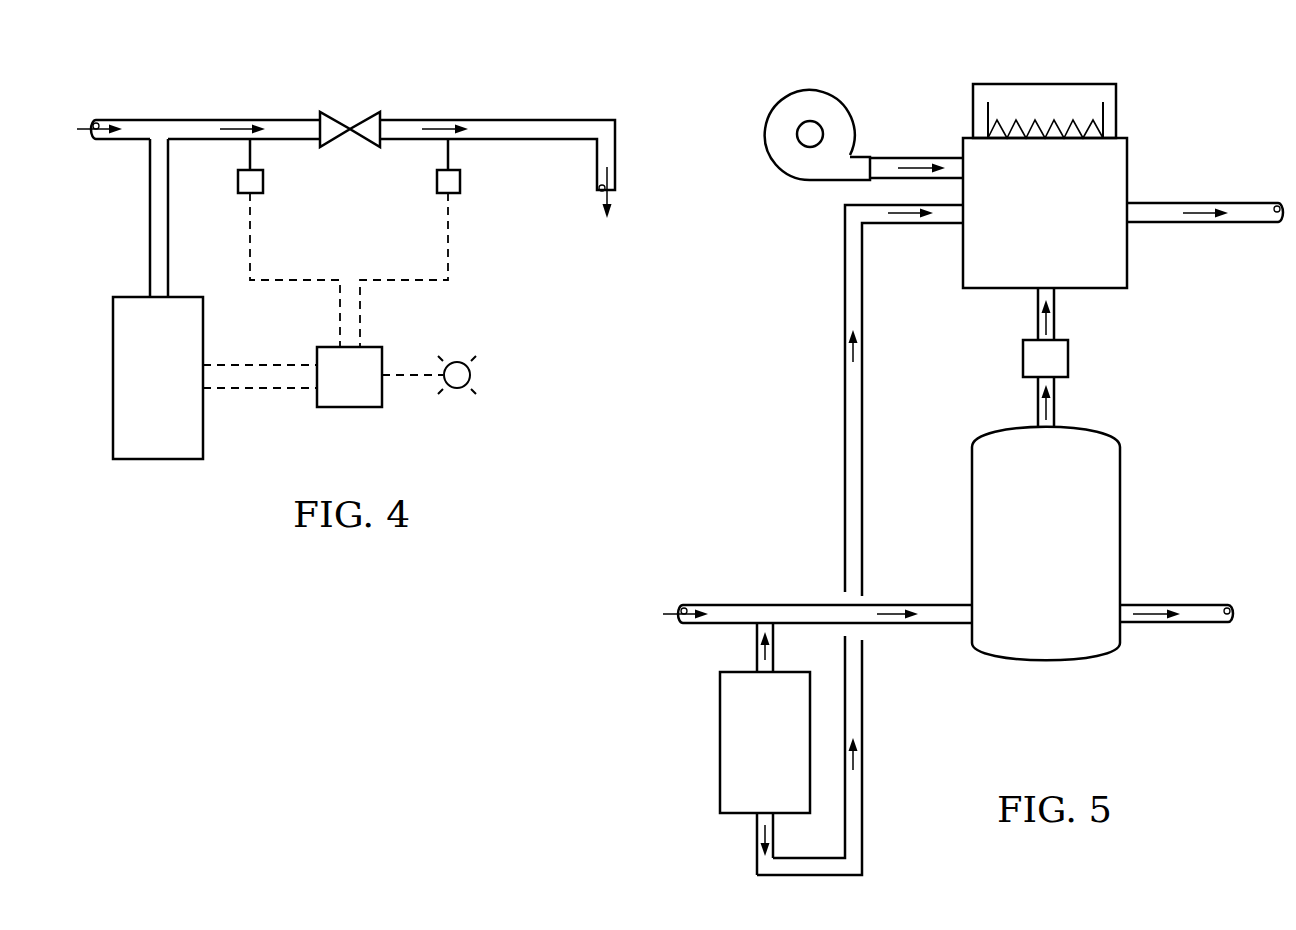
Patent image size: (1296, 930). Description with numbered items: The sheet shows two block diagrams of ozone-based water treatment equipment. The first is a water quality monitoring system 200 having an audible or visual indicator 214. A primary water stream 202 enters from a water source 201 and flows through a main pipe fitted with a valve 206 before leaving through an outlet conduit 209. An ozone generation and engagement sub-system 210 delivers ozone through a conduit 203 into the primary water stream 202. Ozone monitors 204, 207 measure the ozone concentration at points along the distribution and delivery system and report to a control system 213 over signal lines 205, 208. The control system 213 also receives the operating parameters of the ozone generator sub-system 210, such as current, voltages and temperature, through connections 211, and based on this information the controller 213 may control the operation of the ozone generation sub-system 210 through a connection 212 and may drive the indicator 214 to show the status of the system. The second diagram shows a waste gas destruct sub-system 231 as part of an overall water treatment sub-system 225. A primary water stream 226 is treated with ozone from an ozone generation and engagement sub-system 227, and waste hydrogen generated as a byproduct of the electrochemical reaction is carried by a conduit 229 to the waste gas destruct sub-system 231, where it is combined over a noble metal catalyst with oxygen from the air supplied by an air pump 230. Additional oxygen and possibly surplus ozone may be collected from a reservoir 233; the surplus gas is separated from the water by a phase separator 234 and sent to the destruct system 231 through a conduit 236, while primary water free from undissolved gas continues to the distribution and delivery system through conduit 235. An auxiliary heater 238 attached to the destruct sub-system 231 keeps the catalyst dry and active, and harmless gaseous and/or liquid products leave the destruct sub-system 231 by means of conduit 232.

In FIG. 4, the water quality monitoring system 200 is at (516, 82).
In FIG. 4, the water source 201 is at (93, 121).
In FIG. 4, the primary water stream 202 is at (160, 120).
In FIG. 4, the conduit 203 is at (150, 194).
In FIG. 4, the ozone monitor 204 is at (263, 187).
In FIG. 4, the first sensor signal line 205 is at (252, 252).
In FIG. 4, the valve 206 is at (362, 118).
In FIG. 4, the ozone monitor 207 is at (461, 173).
In FIG. 4, the second sensor signal line 208 is at (450, 252).
In FIG. 4, the outlet conduit 209 is at (617, 156).
In FIG. 4, the ozone generation and engagement sub-system 210 is at (134, 295).
In FIG. 4, the connections 211 is at (287, 366).
In FIG. 4, the connection 212 is at (250, 389).
In FIG. 4, the control system 213 is at (352, 408).
In FIG. 4, the audible or visual indicator 214 is at (470, 372).
In FIG. 5, the water treatment sub-system 225 is at (773, 284).
In FIG. 5, the primary water stream 226 is at (678, 612).
In FIG. 5, the ozone generation and engagement sub-system 227 is at (720, 722).
In FIG. 5, the conduit 229 is at (845, 400).
In FIG. 5, the air pump 230 is at (833, 92).
In FIG. 5, the waste gas destruct sub-system 231 is at (1129, 162).
In FIG. 5, the conduit 232 is at (1203, 203).
In FIG. 5, the reservoir 233 is at (1072, 428).
In FIG. 5, the phase separator 234 is at (1069, 363).
In FIG. 5, the conduit 235 is at (1195, 605).
In FIG. 5, the conduit 236 is at (1055, 322).
In FIG. 5, the auxiliary heater 238 is at (1103, 122).